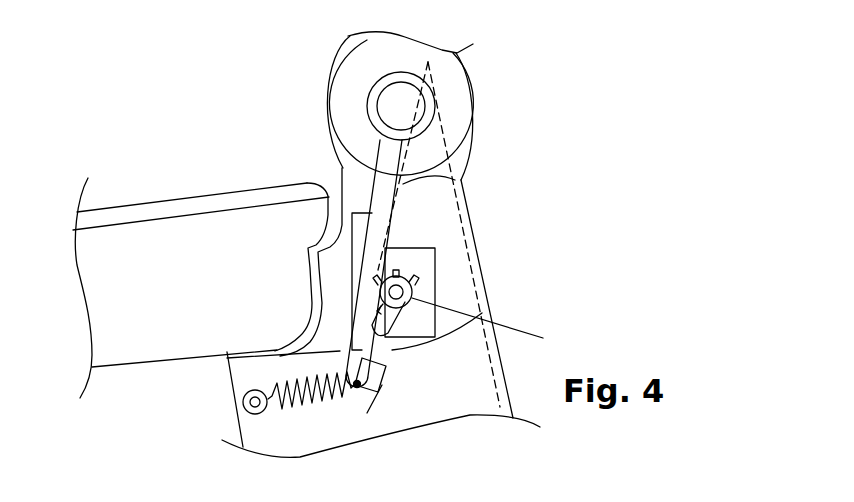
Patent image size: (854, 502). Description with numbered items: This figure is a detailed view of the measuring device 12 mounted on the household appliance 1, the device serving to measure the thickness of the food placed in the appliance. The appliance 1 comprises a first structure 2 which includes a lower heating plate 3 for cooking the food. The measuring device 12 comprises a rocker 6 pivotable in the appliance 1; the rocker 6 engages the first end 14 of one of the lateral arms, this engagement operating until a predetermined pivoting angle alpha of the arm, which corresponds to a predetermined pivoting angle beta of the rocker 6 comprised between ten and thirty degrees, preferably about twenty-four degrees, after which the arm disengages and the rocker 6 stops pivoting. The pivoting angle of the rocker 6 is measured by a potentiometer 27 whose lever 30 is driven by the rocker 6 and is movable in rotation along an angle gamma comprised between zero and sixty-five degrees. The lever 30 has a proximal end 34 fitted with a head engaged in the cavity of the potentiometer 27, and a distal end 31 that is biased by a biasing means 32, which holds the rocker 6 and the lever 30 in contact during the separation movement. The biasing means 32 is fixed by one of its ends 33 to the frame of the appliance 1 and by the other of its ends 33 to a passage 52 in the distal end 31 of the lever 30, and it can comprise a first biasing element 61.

The household appliance 1 is at (212, 117).
The first structure 2 is at (137, 330).
The lower heating plate 3 is at (172, 207).
The rocker 6 is at (383, 203).
The measuring device 12 is at (485, 297).
The first end of lateral arm 14 is at (453, 92).
The potentiometer 27 is at (422, 283).
The lever 30 is at (385, 370).
The distal end 31 is at (305, 355).
The biasing means 32 is at (316, 437).
The ends of biasing means 33 is at (278, 388).
The proximal end 34 is at (408, 260).
The passage 52 is at (378, 398).
The first biasing element 61 is at (318, 392).